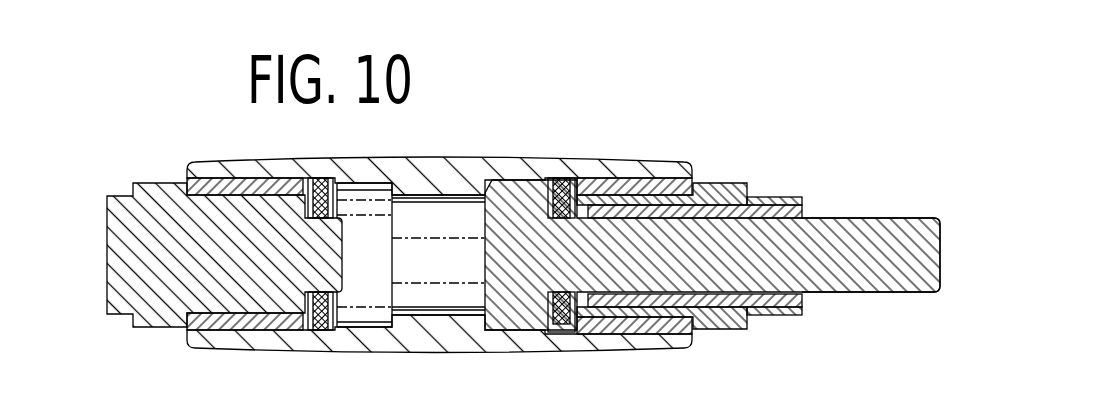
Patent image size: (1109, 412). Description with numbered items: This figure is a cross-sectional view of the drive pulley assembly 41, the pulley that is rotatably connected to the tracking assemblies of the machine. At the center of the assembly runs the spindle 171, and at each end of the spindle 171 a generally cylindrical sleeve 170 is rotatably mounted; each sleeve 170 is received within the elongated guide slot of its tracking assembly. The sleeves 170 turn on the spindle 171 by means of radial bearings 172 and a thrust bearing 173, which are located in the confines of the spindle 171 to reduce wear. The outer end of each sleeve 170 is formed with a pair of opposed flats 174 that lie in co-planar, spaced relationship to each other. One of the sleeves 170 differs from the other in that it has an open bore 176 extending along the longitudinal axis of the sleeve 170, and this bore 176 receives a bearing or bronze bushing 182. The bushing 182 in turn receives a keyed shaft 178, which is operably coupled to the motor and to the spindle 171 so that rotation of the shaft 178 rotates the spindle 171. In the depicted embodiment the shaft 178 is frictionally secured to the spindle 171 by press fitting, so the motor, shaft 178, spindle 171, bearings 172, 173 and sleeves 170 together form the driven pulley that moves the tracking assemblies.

The drive pulley assembly 41 is at (790, 136).
The sleeve 170 is at (158, 328).
The spindle 171 is at (448, 167).
The radial bearings 172 is at (262, 323).
The thrust bearing 173 is at (318, 178).
The opposed flats 174 is at (770, 197).
The open bore 176 is at (730, 292).
The keyed shaft 178 is at (900, 218).
The bronze bushing 182 is at (807, 208).